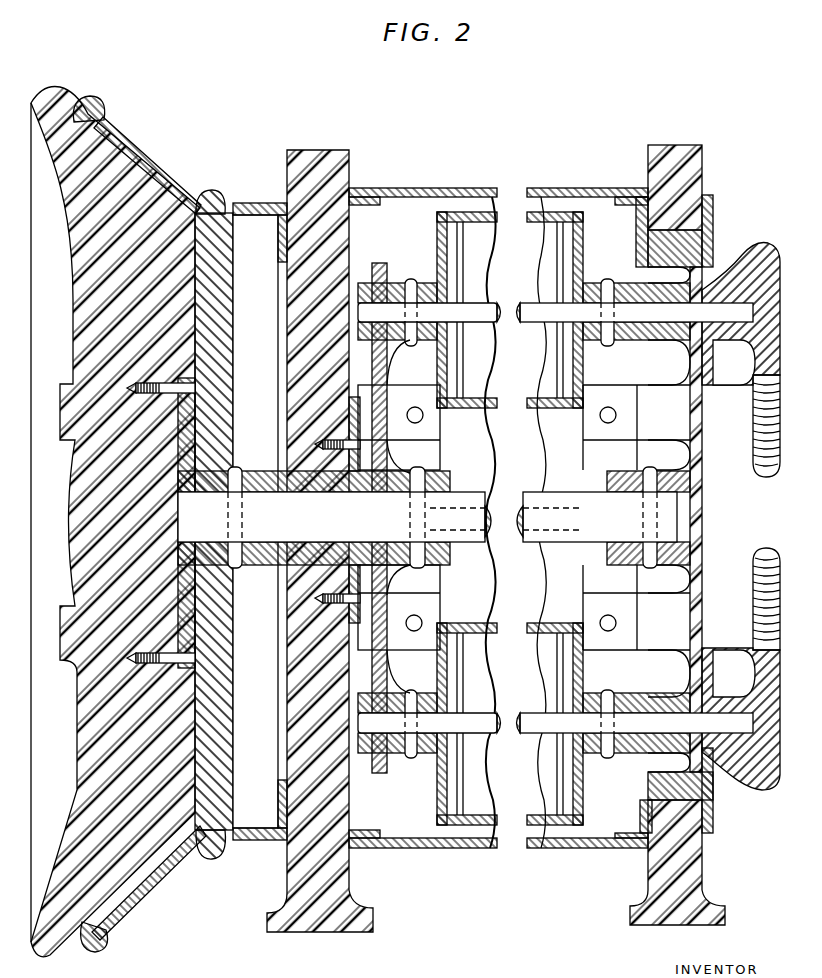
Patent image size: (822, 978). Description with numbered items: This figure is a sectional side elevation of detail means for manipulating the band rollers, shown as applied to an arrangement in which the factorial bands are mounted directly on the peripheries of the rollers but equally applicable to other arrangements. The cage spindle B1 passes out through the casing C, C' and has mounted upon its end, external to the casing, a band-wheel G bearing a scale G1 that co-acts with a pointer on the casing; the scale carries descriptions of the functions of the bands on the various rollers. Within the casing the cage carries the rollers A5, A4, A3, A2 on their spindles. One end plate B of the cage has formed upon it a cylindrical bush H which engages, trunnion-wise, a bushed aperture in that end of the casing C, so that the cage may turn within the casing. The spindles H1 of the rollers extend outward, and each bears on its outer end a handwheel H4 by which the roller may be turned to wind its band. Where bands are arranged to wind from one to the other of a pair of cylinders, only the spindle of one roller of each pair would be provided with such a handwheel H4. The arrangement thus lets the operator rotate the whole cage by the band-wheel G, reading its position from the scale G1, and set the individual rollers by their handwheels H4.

The band-wheel G is at (73, 226).
The scale G1 is at (155, 166).
The casing C is at (498, 188).
The casing C' is at (498, 852).
The roller A5 is at (437, 240).
The roller A4 is at (431, 443).
The roller A3 is at (432, 592).
The roller A2 is at (437, 792).
The end plate B is at (386, 374).
The cage spindle B1 is at (434, 517).
The cylindrical bush H is at (692, 255).
The roller spindle H1 is at (548, 311).
The handwheel H4 is at (770, 246).